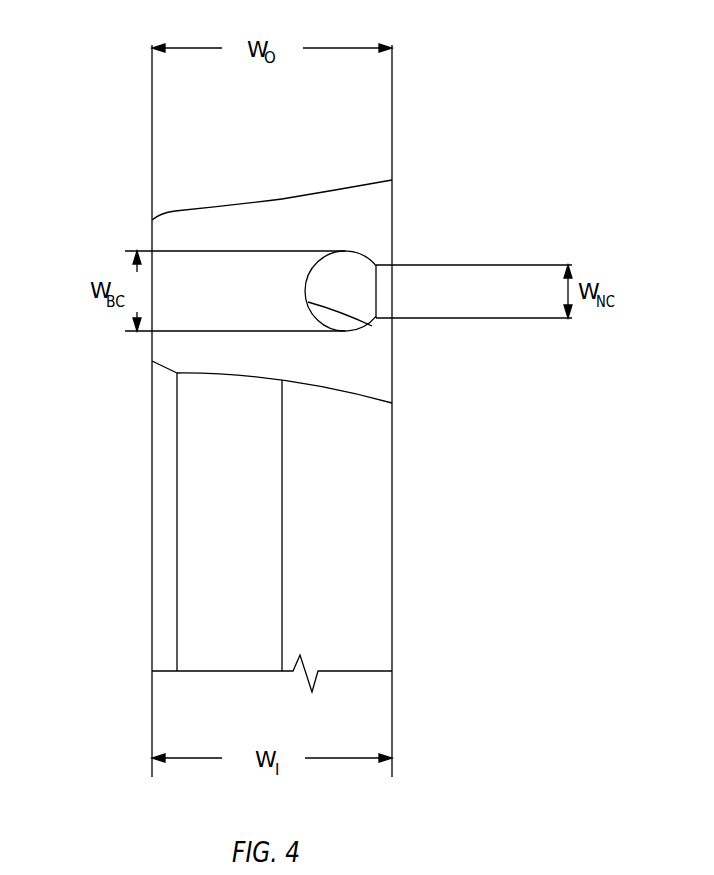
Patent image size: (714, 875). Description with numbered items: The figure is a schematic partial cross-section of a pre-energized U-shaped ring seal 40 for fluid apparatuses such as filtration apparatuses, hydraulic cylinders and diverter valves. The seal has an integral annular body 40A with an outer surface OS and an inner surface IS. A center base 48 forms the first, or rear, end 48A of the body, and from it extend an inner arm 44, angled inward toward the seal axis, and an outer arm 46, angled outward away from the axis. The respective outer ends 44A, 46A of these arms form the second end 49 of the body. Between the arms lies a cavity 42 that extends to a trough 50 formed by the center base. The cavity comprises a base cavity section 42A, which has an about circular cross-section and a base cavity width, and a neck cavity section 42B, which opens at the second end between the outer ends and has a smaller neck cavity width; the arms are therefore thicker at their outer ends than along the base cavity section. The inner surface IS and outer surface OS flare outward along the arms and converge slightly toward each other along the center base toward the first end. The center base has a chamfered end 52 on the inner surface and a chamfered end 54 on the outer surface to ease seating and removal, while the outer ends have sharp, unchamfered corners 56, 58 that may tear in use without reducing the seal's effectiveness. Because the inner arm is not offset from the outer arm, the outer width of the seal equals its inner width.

The seal 40 is at (131, 121).
The integral annular body 40A is at (152, 578).
The cavity 42 is at (384, 298).
The base cavity section 42A is at (327, 278).
The neck cavity section 42B is at (383, 288).
The inner arm 44 is at (282, 380).
The outer end of inner arm 44A is at (392, 370).
The outer arm 46 is at (338, 190).
The outer end of outer arm 46A is at (392, 242).
The center base 48 is at (215, 205).
The first end 48A is at (150, 238).
The second end 49 is at (395, 188).
The trough 50 is at (372, 326).
The chamfered end 52 is at (160, 368).
The chamfered end 54 is at (163, 213).
The sharp outer corner 56 is at (392, 403).
The sharp outer corner 58 is at (393, 178).
The outer surface OS is at (268, 205).
The inner surface IS is at (360, 399).